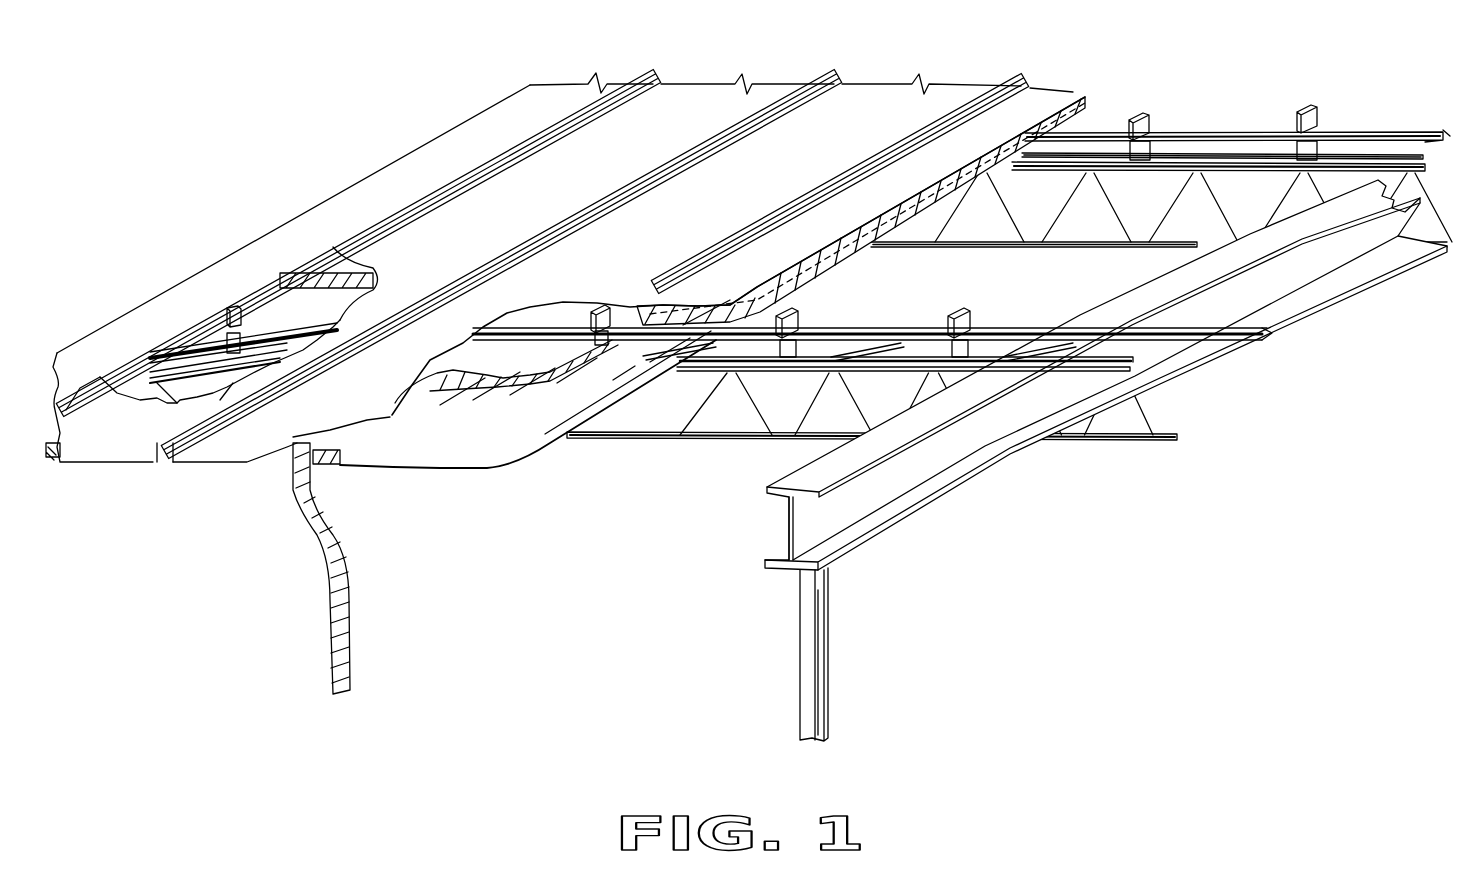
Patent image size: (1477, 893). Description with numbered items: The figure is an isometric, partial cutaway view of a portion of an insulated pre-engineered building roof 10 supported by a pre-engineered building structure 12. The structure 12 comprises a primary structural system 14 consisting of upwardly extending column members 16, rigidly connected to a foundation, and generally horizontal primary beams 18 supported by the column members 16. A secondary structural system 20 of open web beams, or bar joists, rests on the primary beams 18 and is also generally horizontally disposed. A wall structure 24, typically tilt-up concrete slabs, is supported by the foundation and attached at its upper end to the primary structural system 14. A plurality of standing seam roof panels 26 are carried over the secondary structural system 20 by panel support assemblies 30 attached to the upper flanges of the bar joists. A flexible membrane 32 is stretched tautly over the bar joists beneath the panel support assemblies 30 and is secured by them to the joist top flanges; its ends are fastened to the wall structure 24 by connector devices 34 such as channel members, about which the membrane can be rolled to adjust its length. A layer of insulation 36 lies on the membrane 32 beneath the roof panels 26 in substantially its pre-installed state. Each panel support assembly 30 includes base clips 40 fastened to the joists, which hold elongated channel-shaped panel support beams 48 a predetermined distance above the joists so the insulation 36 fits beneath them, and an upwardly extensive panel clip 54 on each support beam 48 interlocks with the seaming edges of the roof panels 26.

The pre-engineered building roof 10 is at (312, 202).
The pre-engineered building structure 12 is at (785, 526).
The primary structural system 14 is at (832, 598).
The column members 16 is at (803, 637).
The primary beams 18 is at (882, 495).
The secondary structural system 20 is at (1162, 435).
The wall structure 24 is at (222, 560).
The roof panels 26 is at (437, 150).
The panel support assemblies 30 is at (1276, 331).
The flexible membrane 32 is at (430, 473).
The connector devices 34 is at (333, 475).
The layer of insulation 36 is at (1073, 102).
The base clips 40 is at (1335, 140).
The panel support beams 48 is at (1232, 132).
The panel clip 54 is at (1148, 118).